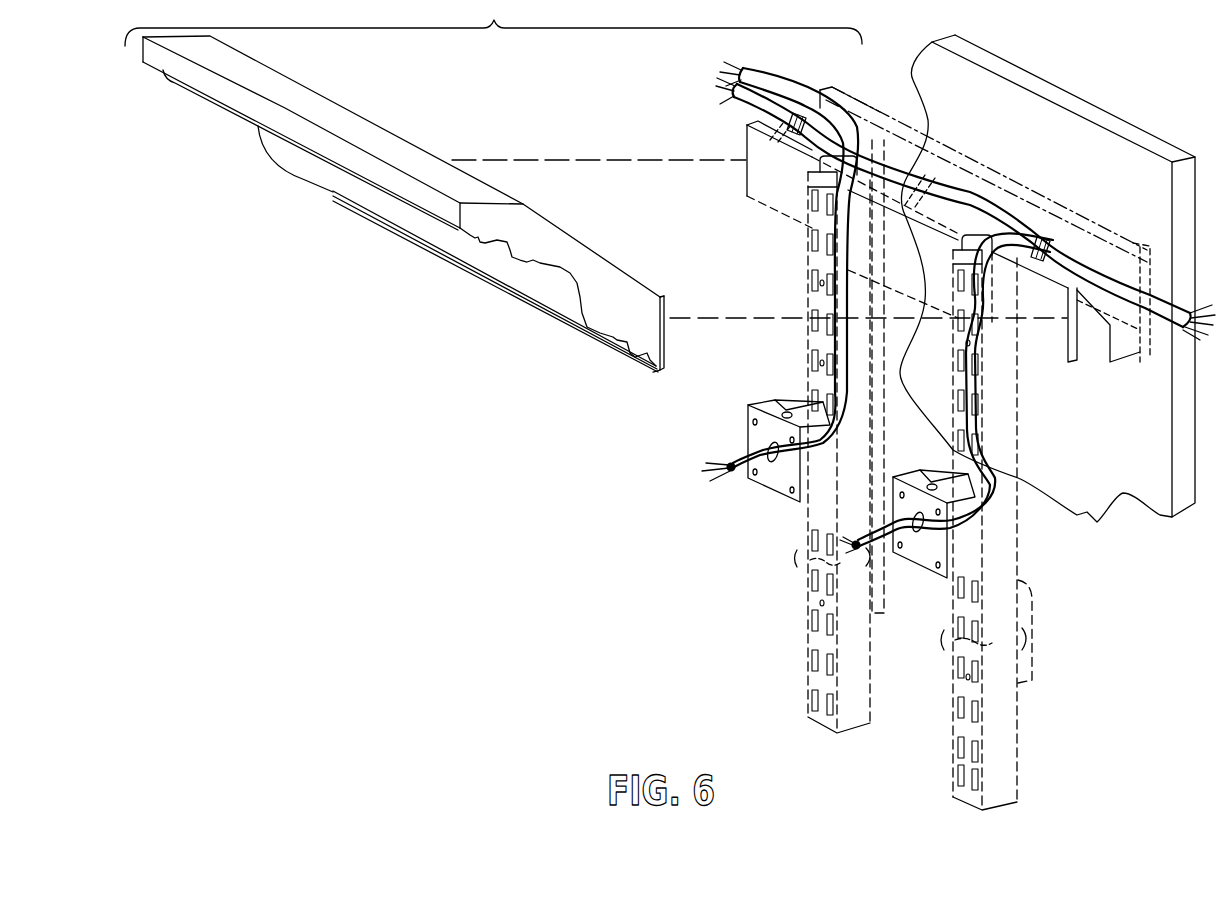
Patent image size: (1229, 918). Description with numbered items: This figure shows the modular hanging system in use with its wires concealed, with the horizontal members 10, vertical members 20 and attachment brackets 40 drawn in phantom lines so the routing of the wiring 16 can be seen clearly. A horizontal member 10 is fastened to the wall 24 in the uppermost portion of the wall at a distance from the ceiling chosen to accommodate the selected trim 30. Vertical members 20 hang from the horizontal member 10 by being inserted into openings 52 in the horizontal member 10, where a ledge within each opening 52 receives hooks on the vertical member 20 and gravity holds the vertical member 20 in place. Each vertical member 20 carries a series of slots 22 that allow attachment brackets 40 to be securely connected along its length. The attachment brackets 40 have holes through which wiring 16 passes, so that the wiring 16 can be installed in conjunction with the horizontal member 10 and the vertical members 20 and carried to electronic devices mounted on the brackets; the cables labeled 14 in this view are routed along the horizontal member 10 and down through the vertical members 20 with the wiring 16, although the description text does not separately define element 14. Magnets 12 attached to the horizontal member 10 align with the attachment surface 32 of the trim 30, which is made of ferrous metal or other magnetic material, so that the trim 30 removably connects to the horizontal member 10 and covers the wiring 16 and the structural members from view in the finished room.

The horizontal member 10 is at (961, 203).
The magnet 12 is at (790, 195).
The cable 14 is at (800, 117).
The wiring 16 is at (740, 472).
The vertical member 20 is at (853, 467).
The slot 22 is at (815, 342).
The wall 24 is at (1087, 112).
The trim 30 is at (410, 204).
The attachment surface 32 is at (662, 330).
The attachment bracket 40 is at (752, 438).
The opening 52 is at (867, 170).